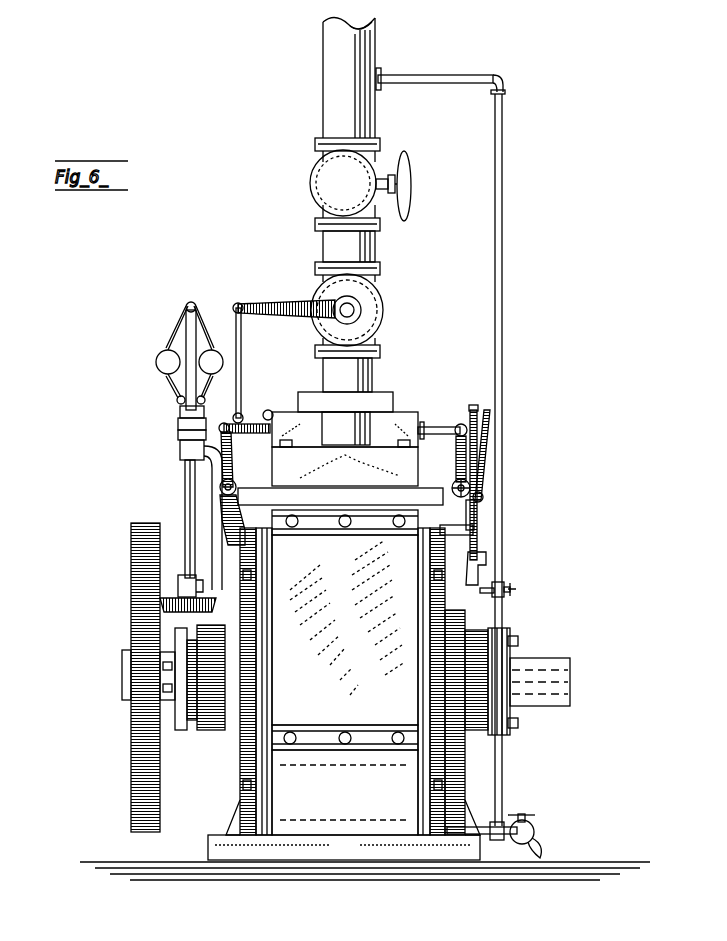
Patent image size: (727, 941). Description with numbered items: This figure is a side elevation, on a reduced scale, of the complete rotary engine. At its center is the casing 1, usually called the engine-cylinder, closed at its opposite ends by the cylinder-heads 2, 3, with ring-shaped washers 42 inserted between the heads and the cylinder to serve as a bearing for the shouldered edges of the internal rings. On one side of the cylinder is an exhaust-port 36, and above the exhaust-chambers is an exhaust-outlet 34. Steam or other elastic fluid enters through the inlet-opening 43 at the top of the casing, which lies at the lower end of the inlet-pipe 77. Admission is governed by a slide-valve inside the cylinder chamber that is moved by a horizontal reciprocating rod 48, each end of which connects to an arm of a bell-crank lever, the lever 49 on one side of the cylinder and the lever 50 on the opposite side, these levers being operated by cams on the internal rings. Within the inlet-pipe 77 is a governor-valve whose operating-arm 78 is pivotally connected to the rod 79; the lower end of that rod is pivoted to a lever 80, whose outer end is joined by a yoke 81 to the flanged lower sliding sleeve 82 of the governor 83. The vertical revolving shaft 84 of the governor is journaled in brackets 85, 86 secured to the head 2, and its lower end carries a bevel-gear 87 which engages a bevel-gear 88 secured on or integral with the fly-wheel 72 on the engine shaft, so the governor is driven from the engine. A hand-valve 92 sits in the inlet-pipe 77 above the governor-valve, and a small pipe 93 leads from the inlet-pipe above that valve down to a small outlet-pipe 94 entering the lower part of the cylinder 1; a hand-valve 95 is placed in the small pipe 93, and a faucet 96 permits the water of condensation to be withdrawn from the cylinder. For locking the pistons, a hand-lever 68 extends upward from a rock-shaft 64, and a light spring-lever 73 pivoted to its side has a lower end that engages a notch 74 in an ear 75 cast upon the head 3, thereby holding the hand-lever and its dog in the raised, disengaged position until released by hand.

The casing 1 is at (345, 780).
The cylinder-head 2 is at (228, 786).
The cylinder-head 3 is at (462, 589).
The exhaust-outlet 34 is at (410, 442).
The exhaust-port 36 is at (455, 474).
The ring-shaped washer 42 is at (322, 645).
The inlet-opening 43 is at (372, 376).
The reciprocating rod 48 is at (252, 434).
The bell-crank lever 49 is at (233, 470).
The bell-crank lever 50 is at (451, 459).
The rock-shaft 64 is at (473, 532).
The hand-lever 68 is at (482, 449).
The fly-wheel 72 is at (146, 622).
The spring-lever 73 is at (479, 421).
The notch 74 is at (488, 556).
The ear 75 is at (488, 593).
The inlet-pipe 77 is at (325, 86).
The operating-arm 78 is at (300, 314).
The rod 79 is at (240, 375).
The lever 80 is at (226, 422).
The yoke 81 is at (178, 424).
The sliding sleeve 82 is at (180, 412).
The governor 83 is at (172, 338).
The revolving shaft 84 is at (185, 488).
The bracket 85 is at (180, 452).
The bracket 86 is at (178, 582).
The bevel-gear 87 is at (160, 604).
The bevel-gear 88 is at (164, 728).
The hand-valve 92 is at (411, 180).
The small pipe 93 is at (502, 293).
The outlet-pipe 94 is at (460, 827).
The hand-valve 95 is at (516, 590).
The faucet 96 is at (531, 826).